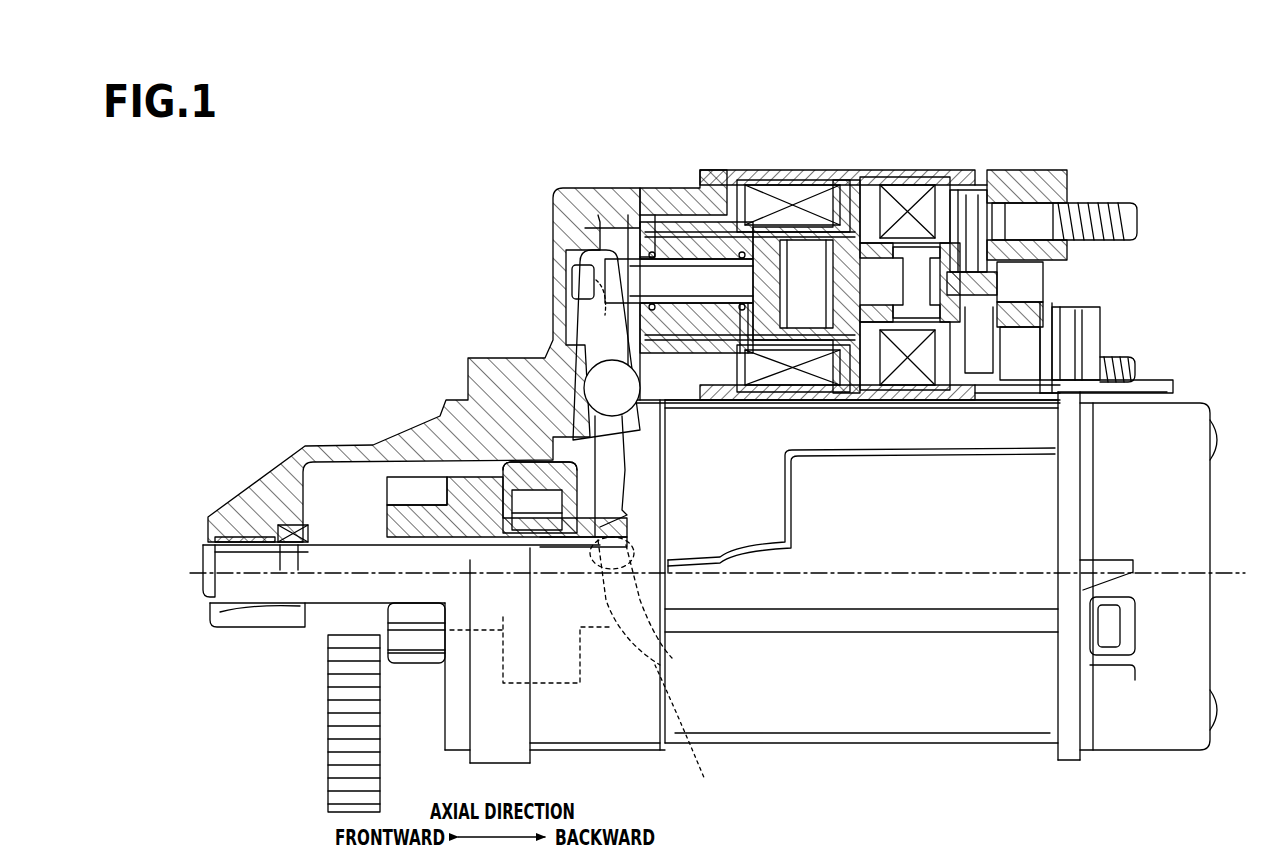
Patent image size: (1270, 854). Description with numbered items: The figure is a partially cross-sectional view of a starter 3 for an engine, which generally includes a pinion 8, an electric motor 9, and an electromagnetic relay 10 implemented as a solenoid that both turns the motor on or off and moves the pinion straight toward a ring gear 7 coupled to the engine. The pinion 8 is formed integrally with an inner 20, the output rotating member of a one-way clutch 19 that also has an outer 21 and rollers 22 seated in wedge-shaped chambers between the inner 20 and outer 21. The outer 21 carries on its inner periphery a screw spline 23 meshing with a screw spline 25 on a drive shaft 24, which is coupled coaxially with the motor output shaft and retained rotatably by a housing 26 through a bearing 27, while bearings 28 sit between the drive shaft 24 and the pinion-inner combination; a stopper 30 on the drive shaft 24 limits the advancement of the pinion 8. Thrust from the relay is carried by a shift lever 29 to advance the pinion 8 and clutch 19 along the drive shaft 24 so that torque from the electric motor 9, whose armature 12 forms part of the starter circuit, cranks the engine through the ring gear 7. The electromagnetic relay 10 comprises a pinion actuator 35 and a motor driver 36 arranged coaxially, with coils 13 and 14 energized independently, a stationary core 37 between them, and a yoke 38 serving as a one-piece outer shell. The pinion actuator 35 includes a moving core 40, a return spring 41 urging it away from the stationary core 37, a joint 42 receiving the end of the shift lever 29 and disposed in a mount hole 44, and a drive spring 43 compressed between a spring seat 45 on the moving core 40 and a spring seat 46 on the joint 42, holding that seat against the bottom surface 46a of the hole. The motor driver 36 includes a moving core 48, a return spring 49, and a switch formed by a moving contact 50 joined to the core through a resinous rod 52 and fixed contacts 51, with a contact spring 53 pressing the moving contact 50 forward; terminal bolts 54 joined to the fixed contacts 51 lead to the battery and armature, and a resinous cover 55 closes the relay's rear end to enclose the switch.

The starter 3 is at (320, 192).
The ring gear 7 is at (340, 660).
The pinion 8 is at (416, 663).
The electric motor 9 is at (958, 745).
The electromagnetic relay 10 is at (1190, 186).
The armature 12 is at (985, 463).
The coil 13 is at (806, 195).
The coil 14 is at (904, 195).
The one-way clutch 19 is at (402, 290).
The inner 20 is at (495, 520).
The outer 21 is at (497, 455).
The rollers 22 is at (507, 490).
The screw spline 23 is at (691, 738).
The drive shaft 24 is at (347, 560).
The screw spline 25 is at (548, 580).
The housing 26 is at (272, 470).
The bearing 27 is at (233, 515).
The bearings 28 is at (392, 512).
The shift lever 29 is at (600, 335).
The stopper 30 is at (310, 525).
The pinion actuator 35 is at (755, 251).
The motor driver 36 is at (1105, 158).
The stationary core 37 is at (868, 200).
The yoke 38 is at (790, 180).
The moving core 40 is at (762, 232).
The return spring 41 is at (838, 225).
The joint 42 is at (583, 285).
The drive spring 43 is at (722, 250).
The mount hole 44 is at (690, 210).
The spring seat 45 is at (598, 222).
The spring seat 46 is at (688, 262).
The bottom surface 46a is at (750, 355).
The moving core 48 is at (952, 250).
The return spring 49 is at (920, 245).
The moving contact 50 is at (1040, 290).
The fixed contacts 51 is at (1002, 205).
The resinous rod 52 is at (976, 240).
The contact spring 53 is at (1045, 330).
The terminal bolts 54 is at (1100, 225).
The resinous cover 55 is at (1042, 200).